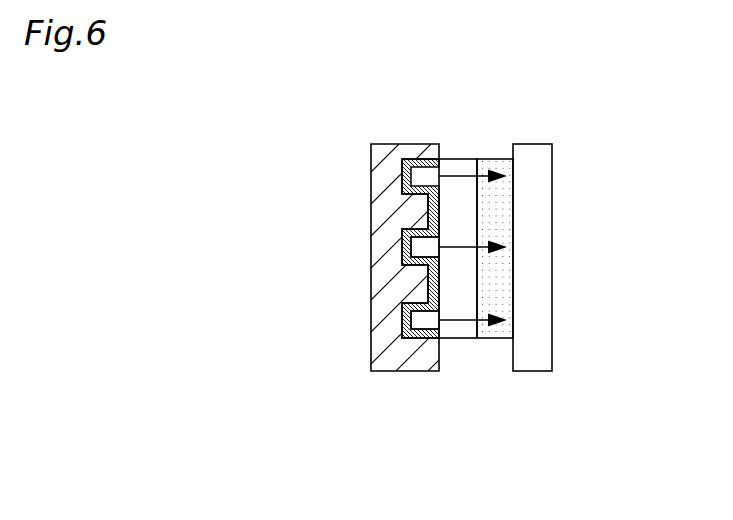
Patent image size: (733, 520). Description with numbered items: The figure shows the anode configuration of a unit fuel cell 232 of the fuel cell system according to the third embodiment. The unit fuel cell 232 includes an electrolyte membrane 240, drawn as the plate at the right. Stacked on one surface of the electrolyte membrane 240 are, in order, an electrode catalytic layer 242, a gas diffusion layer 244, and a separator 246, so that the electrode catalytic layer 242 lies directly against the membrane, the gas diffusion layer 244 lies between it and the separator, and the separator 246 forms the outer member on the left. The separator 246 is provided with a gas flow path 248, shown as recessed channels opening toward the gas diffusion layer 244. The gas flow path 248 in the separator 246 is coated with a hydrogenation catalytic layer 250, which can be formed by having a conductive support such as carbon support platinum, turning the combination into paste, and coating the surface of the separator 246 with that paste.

The unit fuel cell 232 is at (224, 267).
The electrolyte membrane 240 is at (533, 157).
The electrode catalytic layer 242 is at (490, 158).
The gas diffusion layer 244 is at (453, 159).
The separator 246 is at (390, 148).
The gas flow path 248 is at (422, 246).
The hydrogenation catalytic layer 250 is at (411, 157).